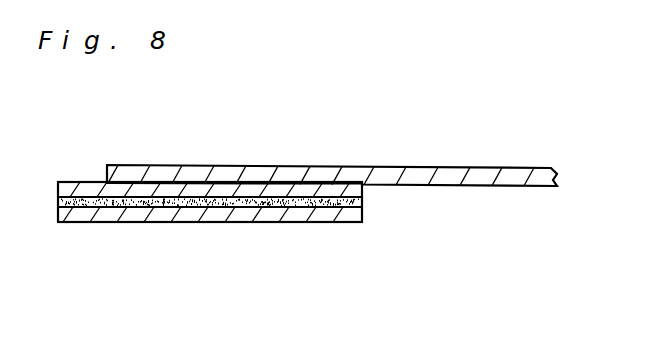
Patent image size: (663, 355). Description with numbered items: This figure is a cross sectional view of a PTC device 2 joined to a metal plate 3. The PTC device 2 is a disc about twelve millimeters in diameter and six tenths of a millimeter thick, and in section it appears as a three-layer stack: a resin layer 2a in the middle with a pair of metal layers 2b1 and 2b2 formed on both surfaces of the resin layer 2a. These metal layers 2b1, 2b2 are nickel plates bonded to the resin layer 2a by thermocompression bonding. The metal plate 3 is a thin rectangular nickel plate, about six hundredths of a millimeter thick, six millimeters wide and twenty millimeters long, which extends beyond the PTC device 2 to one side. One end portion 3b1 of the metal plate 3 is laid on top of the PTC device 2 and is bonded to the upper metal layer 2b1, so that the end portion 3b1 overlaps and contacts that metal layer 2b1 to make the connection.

The PTC device 2 is at (210, 259).
The resin layer 2a is at (196, 203).
The metal layer 2b1 is at (147, 187).
The metal layer 2b2 is at (95, 276).
The metal plate 3 is at (416, 178).
The end portion 3b1 is at (218, 176).